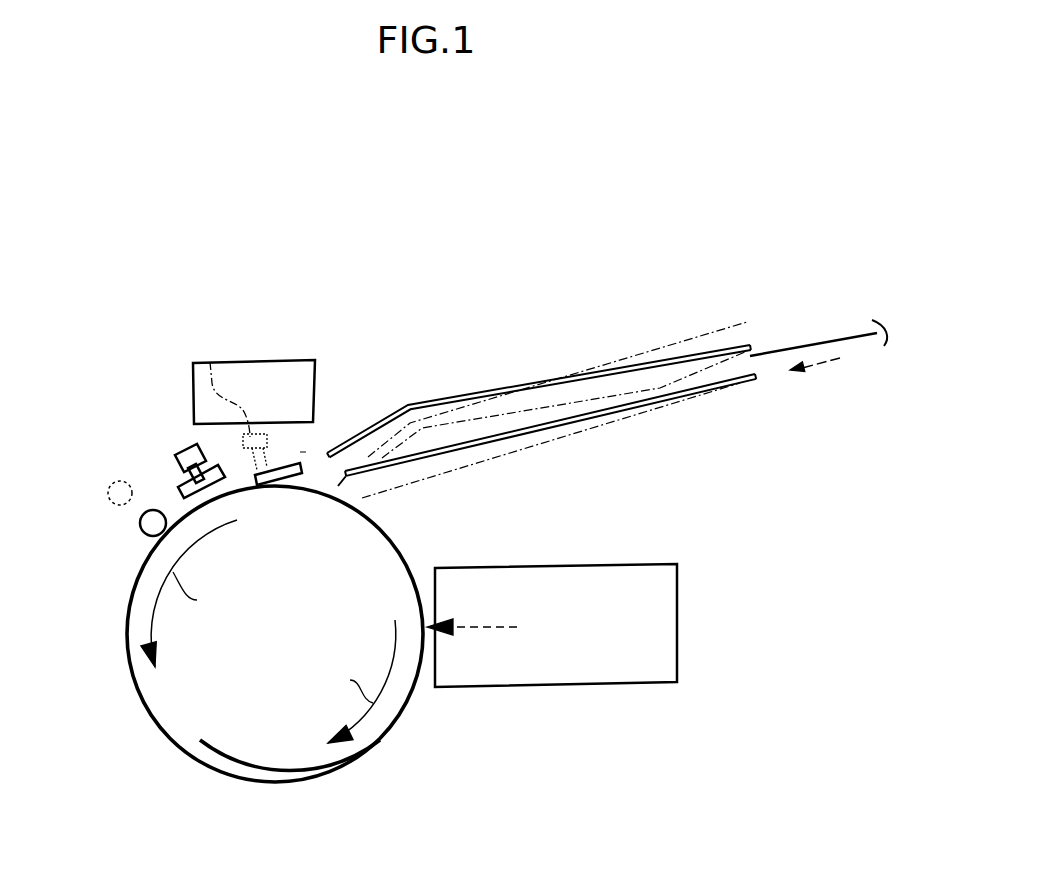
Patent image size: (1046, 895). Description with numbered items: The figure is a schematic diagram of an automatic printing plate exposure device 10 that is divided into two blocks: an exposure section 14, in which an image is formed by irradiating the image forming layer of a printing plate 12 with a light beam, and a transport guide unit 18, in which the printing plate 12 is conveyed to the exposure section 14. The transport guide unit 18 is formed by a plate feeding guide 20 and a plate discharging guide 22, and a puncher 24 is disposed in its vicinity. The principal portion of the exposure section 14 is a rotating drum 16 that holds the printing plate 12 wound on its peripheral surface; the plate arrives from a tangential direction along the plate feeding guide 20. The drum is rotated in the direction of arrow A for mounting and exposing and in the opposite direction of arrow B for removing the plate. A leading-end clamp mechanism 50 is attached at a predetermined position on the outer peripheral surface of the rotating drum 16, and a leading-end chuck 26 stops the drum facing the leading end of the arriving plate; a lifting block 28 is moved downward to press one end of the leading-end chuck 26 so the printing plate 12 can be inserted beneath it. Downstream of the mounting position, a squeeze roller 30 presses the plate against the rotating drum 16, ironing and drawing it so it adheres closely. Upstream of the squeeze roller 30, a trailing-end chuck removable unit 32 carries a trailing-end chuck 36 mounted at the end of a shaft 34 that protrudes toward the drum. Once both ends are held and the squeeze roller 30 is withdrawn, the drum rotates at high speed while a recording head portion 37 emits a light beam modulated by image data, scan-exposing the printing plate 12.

The automatic printing plate exposure device 10 is at (433, 308).
The printing plate 12 is at (812, 350).
The exposure section 14 is at (182, 769).
The rotating drum 16 is at (308, 781).
The transport guide unit 18 is at (562, 470).
The plate feeding guide 20 is at (470, 443).
The plate discharging guide 22 is at (615, 372).
The puncher 24 is at (292, 360).
The leading-end chuck 26 is at (292, 460).
The lifting block 28 is at (210, 362).
The squeeze roller 30 is at (140, 533).
The trailing-end chuck removable unit 32 is at (98, 392).
The shaft 34 is at (180, 473).
The trailing-end chuck 36 is at (172, 495).
The recording head portion 37 is at (545, 687).
The leading-end clamp mechanism 50 is at (303, 448).